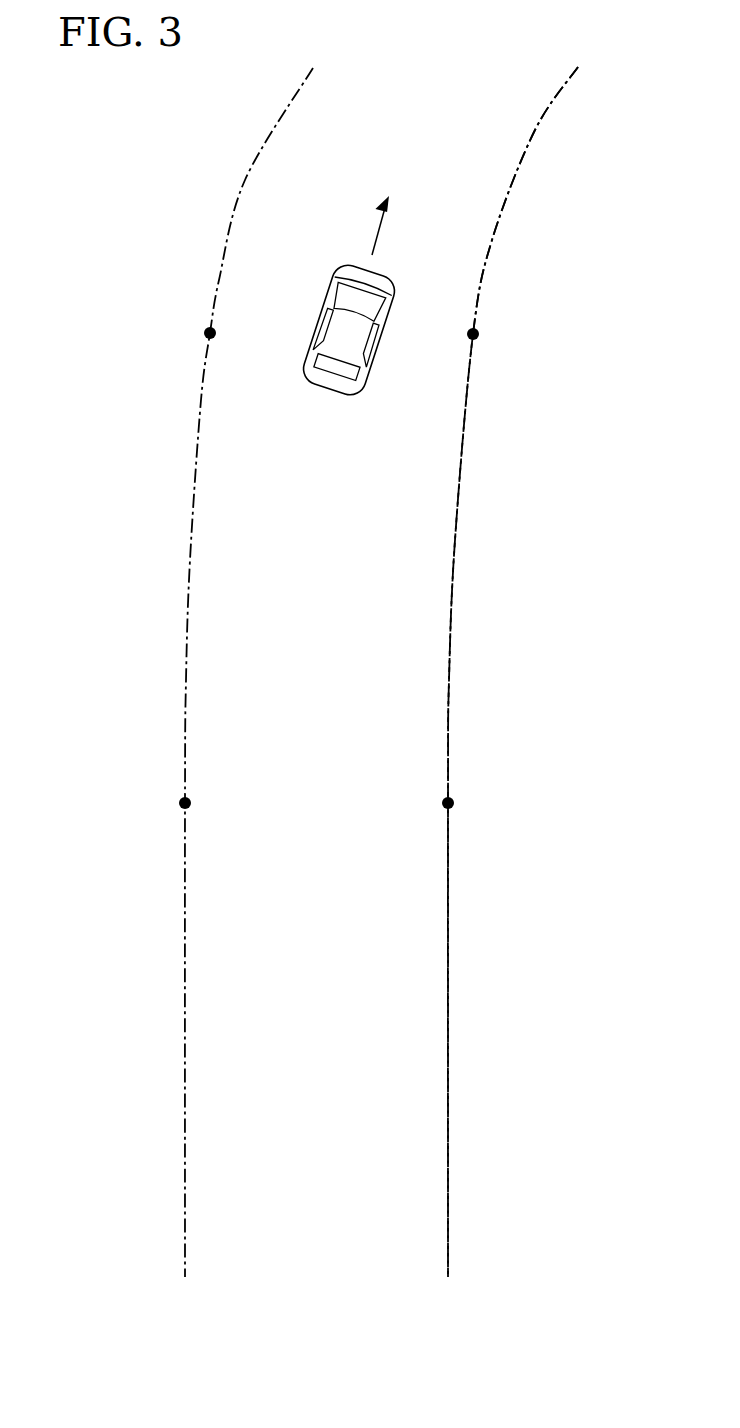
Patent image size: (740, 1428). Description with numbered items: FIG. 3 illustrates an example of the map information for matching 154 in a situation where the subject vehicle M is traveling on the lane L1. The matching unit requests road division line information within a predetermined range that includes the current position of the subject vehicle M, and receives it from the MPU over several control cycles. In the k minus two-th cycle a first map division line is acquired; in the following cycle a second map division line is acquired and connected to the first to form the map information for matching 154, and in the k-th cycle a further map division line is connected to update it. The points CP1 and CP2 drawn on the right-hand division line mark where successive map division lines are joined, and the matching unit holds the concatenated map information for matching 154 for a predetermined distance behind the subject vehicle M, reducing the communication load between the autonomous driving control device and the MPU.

The map information for matching 154 is at (121, 104).
The lane L1 is at (433, 103).
The connection point 1 CP1 is at (479, 334).
The connection point 2 CP2 is at (454, 803).
The subject vehicle M is at (330, 393).